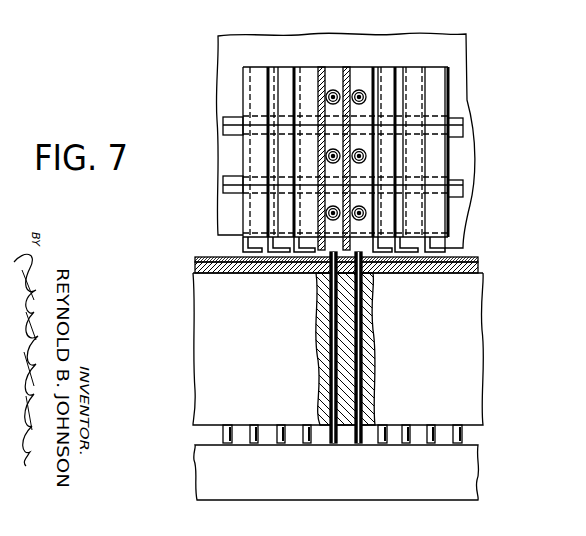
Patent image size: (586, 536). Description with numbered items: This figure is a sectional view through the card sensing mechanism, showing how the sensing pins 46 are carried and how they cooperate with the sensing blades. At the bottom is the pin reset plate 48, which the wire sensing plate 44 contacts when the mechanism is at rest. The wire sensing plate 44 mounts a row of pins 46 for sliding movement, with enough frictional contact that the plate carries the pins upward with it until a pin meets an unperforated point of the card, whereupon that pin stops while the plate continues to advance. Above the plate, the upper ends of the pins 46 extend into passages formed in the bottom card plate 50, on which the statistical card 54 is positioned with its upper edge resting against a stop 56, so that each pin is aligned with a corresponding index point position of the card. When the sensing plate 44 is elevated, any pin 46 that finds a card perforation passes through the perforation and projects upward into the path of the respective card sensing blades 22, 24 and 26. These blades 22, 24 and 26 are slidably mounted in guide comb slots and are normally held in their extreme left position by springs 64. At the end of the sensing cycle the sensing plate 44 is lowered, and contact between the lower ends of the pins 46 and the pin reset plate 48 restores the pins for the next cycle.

The card sensing blade 22 is at (437, 102).
The card sensing blade 24 is at (437, 158).
The card sensing blade 26 is at (437, 217).
The springs 64 is at (355, 91).
The statistical card 54 is at (473, 258).
The stop 56 is at (478, 263).
The bottom card plate 50 is at (478, 270).
The wire sensing plate 44 is at (465, 340).
The pins 46 is at (463, 435).
The pin reset plate 48 is at (463, 477).